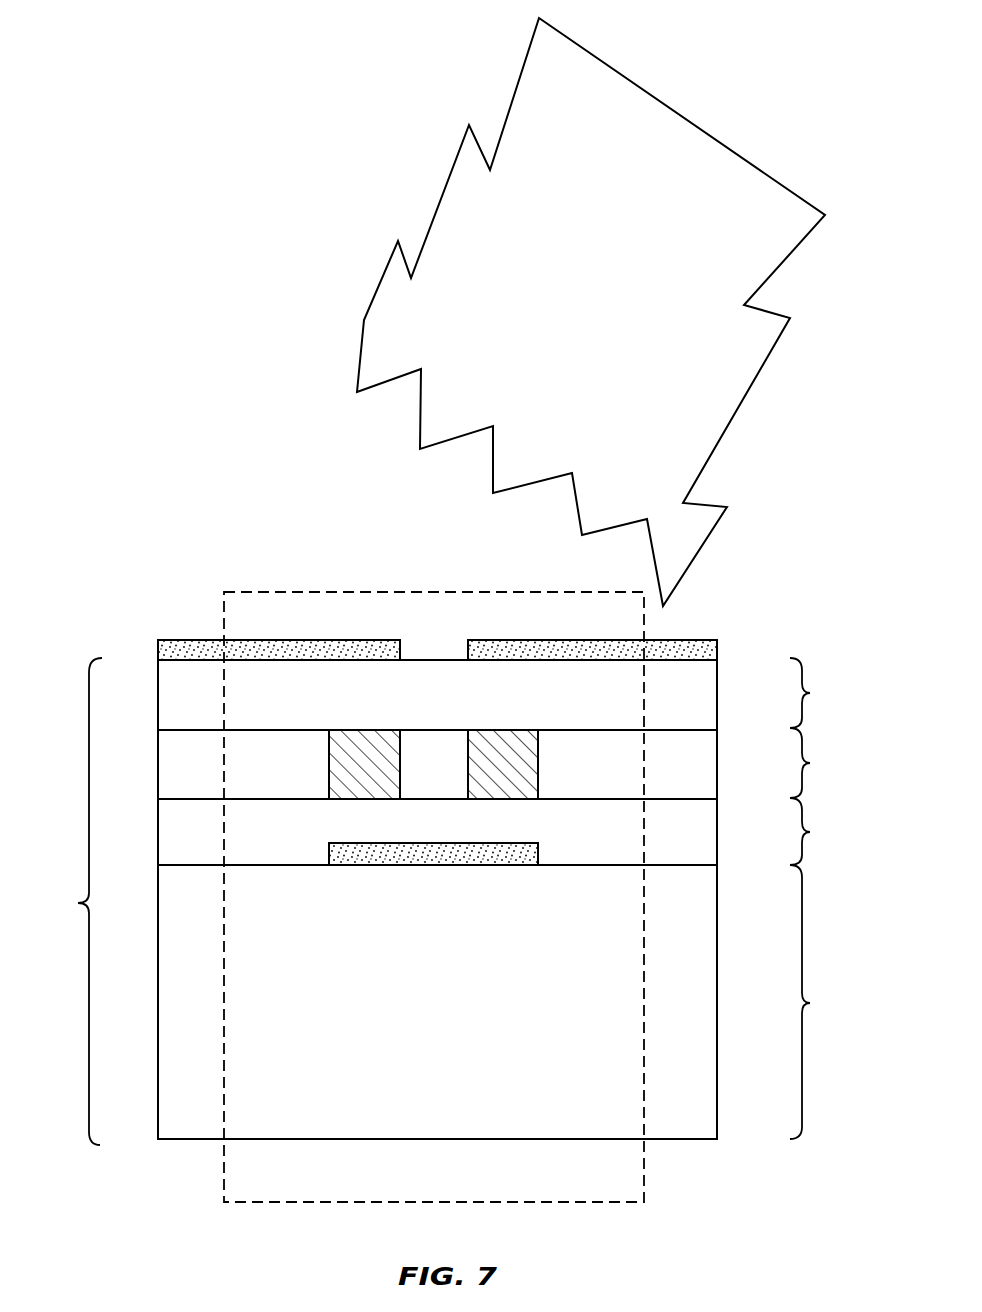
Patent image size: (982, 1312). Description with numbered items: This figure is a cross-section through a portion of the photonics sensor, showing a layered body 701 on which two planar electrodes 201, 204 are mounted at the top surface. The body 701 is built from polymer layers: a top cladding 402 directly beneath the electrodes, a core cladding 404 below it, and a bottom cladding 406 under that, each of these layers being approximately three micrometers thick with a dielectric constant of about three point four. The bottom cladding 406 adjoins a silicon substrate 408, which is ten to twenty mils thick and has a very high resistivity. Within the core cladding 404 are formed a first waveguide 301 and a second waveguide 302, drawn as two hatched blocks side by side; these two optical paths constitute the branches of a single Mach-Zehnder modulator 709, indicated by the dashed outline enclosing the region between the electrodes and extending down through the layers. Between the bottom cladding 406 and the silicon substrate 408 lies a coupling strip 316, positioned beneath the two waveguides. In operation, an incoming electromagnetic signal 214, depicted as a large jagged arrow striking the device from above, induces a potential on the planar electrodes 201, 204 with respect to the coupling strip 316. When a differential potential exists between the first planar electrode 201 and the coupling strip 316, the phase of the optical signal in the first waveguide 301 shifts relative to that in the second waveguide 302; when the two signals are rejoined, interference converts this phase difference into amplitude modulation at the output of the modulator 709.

The electromagnetic signal 214 is at (720, 395).
The Mach-Zehnder modulator 709 is at (388, 590).
The body 701 is at (369, 901).
The planar electrode 204 is at (195, 650).
The first planar electrode 201 is at (692, 643).
The top cladding 402 is at (513, 694).
The core cladding 404 is at (513, 763).
The bottom cladding 406 is at (513, 831).
The silicon substrate 408 is at (514, 1002).
The second waveguide 302 is at (363, 740).
The first waveguide 301 is at (512, 737).
The coupling strip 316 is at (437, 853).